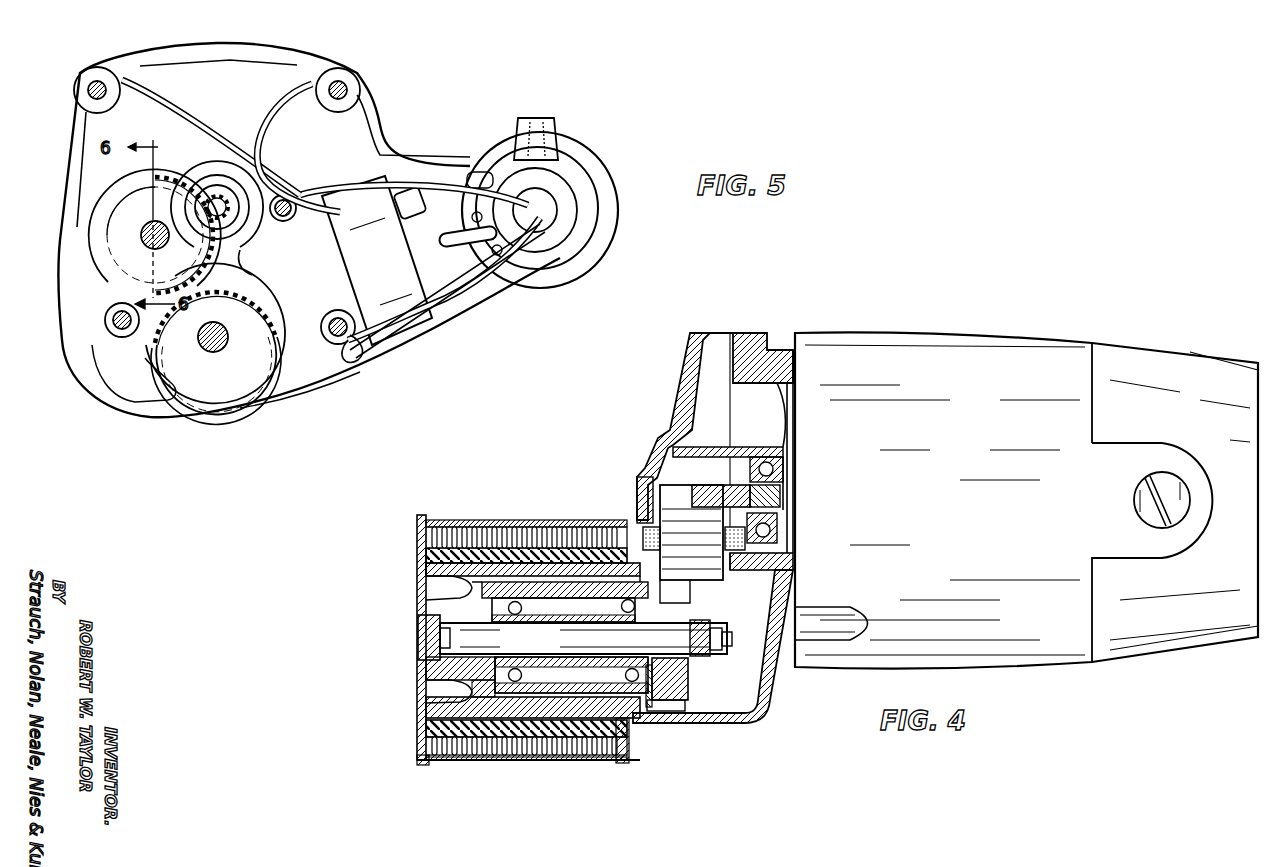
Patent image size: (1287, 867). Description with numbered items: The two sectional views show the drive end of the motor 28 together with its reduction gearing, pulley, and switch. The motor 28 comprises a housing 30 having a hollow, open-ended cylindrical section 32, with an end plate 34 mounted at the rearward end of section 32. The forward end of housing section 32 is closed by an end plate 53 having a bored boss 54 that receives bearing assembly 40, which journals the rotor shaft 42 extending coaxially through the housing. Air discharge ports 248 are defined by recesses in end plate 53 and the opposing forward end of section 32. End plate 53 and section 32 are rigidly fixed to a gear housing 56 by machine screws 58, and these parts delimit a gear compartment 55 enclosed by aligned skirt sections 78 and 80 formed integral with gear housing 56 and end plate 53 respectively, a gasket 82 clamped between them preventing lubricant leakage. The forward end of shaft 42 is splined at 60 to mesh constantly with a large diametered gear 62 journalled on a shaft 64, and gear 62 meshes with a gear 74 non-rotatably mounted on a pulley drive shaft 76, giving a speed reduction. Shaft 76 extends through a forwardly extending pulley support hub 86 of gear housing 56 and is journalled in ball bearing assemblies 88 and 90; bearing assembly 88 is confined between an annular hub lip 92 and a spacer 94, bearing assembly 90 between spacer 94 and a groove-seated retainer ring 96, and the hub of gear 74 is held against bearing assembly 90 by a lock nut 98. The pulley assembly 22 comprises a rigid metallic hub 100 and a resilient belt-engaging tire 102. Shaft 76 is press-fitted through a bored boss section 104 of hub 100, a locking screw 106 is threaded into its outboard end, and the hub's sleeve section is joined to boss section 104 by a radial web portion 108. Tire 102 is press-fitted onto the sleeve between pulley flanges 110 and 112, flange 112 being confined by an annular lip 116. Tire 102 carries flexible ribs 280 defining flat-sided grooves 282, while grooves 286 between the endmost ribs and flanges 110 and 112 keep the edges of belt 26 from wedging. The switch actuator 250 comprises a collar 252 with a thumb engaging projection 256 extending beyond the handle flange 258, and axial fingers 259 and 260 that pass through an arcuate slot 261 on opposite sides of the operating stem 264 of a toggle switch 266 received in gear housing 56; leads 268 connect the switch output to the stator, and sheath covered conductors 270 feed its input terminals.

In FIG. 4, the pulley assembly 22 is at (416, 531).
In FIG. 4, the belt 26 is at (452, 520).
In FIG. 4, the motor 28 is at (998, 666).
In FIG. 4, the housing 30 is at (953, 340).
In FIG. 4, the cylindrical section 32 is at (1025, 342).
In FIG. 4, the end plate 34 is at (1222, 368).
In FIG. 4, the anti-friction roller bearing assembly 40 is at (783, 464).
In FIG. 4, the rotor shaft 42 is at (781, 498).
In FIG. 5, the end plate 53 is at (204, 96).
In FIG. 4, the end plate 53 is at (770, 708).
In FIG. 5, the bored boss 54 is at (222, 195).
In FIG. 4, the bored boss 54 is at (785, 445).
In FIG. 5, the gear compartment 55 is at (253, 272).
In FIG. 4, the gear compartment 55 is at (665, 470).
In FIG. 4, the gear housing 56 is at (680, 385).
In FIG. 5, the machine screws 58 is at (100, 78).
In FIG. 5, the spline teeth 60 is at (215, 196).
In FIG. 4, the spline teeth 60 is at (703, 485).
In FIG. 5, the large diametered gear 62 is at (196, 258).
In FIG. 4, the large diametered gear 62 is at (722, 585).
In FIG. 5, the shaft 64 is at (150, 238).
In FIG. 4, the shaft 64 is at (778, 548).
In FIG. 5, the gear 74 is at (255, 318).
In FIG. 4, the gear 74 is at (668, 702).
In FIG. 5, the pulley drive shaft 76 is at (214, 352).
In FIG. 4, the pulley drive shaft 76 is at (532, 647).
In FIG. 4, the skirt section 78 is at (668, 432).
In FIG. 5, the skirt section 80 is at (150, 385).
In FIG. 4, the skirt section 80 is at (748, 447).
In FIG. 4, the gasket 82 is at (733, 332).
In FIG. 4, the pulley support hub 86 is at (540, 590).
In FIG. 4, the ball bearing assembly 88 is at (503, 598).
In FIG. 4, the ball bearing assembly 90 is at (620, 676).
In FIG. 4, the hub lip 92 is at (432, 590).
In FIG. 4, the spacer 94 is at (570, 620).
In FIG. 4, the retainer ring 96 is at (688, 712).
In FIG. 4, the lock nut 98 is at (702, 660).
In FIG. 4, the hub 100 is at (432, 702).
In FIG. 4, the tire 102 is at (468, 762).
In FIG. 4, the bored boss section 104 is at (440, 604).
In FIG. 4, the locking screw 106 is at (482, 520).
In FIG. 4, the radial web portion 108 is at (428, 700).
In FIG. 4, the pulley flange 110 is at (418, 550).
In FIG. 4, the pulley flange 112 is at (637, 518).
In FIG. 4, the annular lip 116 is at (649, 712).
In FIG. 4, the air discharge ports 248 is at (790, 346).
In FIG. 5, the switch actuator 250 is at (592, 170).
In FIG. 5, the collar 252 is at (598, 214).
In FIG. 5, the thumb engaging projection 256 is at (552, 122).
In FIG. 5, the handle flange 258 is at (580, 148).
In FIG. 5, the axial finger 259 is at (445, 196).
In FIG. 5, the axial finger 260 is at (545, 272).
In FIG. 5, the arcuate slot 261 is at (472, 182).
In FIG. 5, the switch operating stem 264 is at (560, 240).
In FIG. 5, the toggle switch 266 is at (390, 262).
In FIG. 5, the leads 268 is at (268, 160).
In FIG. 5, the sheath covered electrical conductors 270 is at (498, 290).
In FIG. 4, the flexible ribs 280 is at (598, 762).
In FIG. 4, the grooves 282 is at (558, 762).
In FIG. 4, the grooves 286 is at (424, 765).